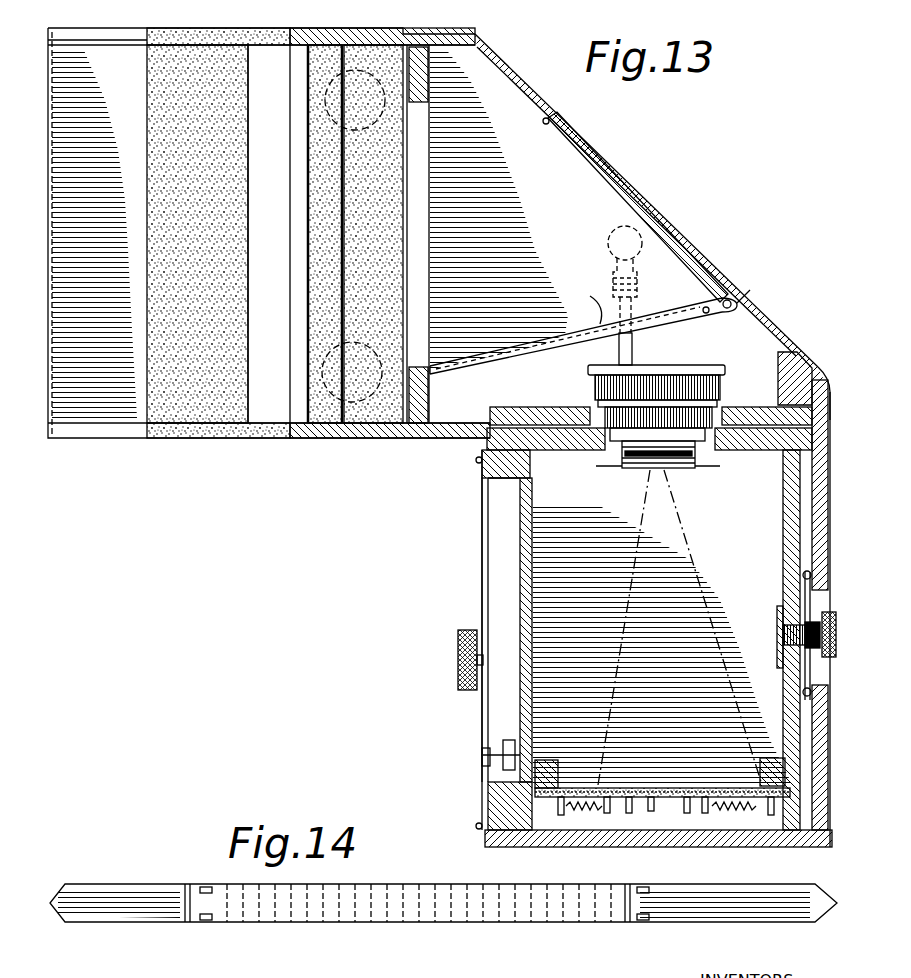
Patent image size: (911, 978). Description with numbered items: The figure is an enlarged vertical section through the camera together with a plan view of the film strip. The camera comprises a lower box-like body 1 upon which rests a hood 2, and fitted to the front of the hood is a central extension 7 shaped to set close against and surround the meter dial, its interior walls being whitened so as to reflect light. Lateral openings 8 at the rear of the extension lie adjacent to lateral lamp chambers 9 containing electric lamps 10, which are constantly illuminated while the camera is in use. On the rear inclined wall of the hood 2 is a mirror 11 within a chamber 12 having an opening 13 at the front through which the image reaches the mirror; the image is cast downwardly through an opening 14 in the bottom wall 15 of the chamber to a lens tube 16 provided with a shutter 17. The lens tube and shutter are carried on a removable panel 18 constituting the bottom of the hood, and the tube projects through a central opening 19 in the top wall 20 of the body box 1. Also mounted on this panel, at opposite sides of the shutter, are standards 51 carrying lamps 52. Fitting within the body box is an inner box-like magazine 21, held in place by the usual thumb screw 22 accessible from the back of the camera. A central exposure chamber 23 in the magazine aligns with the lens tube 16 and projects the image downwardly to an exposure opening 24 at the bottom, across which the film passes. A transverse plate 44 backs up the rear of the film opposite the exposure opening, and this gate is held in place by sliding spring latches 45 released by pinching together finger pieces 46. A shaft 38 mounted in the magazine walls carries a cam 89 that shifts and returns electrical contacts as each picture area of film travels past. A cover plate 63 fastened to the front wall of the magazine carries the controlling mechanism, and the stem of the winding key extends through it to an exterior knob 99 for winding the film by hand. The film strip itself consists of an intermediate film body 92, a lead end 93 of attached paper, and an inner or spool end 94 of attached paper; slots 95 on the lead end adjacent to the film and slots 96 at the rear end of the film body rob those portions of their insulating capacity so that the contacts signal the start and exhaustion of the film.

In FIG. 13, the body 1 is at (824, 472).
In FIG. 13, the hood 2 is at (584, 138).
In FIG. 13, the central extension 7 is at (243, 347).
In FIG. 13, the lateral openings 8 is at (277, 398).
In FIG. 13, the lamp chambers 9 is at (436, 398).
In FIG. 13, the electric lamps 10 is at (330, 118).
In FIG. 13, the mirror 11 is at (584, 168).
In FIG. 13, the chamber 12 is at (552, 244).
In FIG. 13, the opening 13 is at (425, 200).
In FIG. 13, the opening 14 is at (588, 300).
In FIG. 13, the bottom wall 15 is at (522, 345).
In FIG. 13, the lens tube 16 is at (612, 468).
In FIG. 13, the shutter 17 is at (588, 382).
In FIG. 13, the removable panel 18 is at (524, 405).
In FIG. 13, the central opening 19 is at (716, 455).
In FIG. 13, the top wall 20 is at (561, 456).
In FIG. 13, the magazine 21 is at (532, 572).
In FIG. 13, the thumb screw 22 is at (810, 618).
In FIG. 13, the exposure chamber 23 is at (680, 627).
In FIG. 13, the exposure opening 24 is at (663, 790).
In FIG. 13, the shaft 38 is at (500, 750).
In FIG. 13, the transverse plate 44 is at (649, 800).
In FIG. 13, the spring latches 45 is at (607, 800).
In FIG. 13, the finger pieces 46 is at (716, 808).
In FIG. 13, the standards 51 is at (636, 349).
In FIG. 13, the lamps 52 is at (615, 238).
In FIG. 13, the cover plate 63 is at (482, 520).
In FIG. 13, the cam 89 is at (508, 740).
In FIG. 14, the intermediate film body 92 is at (404, 922).
In FIG. 14, the lead end 93 is at (737, 922).
In FIG. 14, the spool end 94 is at (134, 918).
In FIG. 14, the slots 95 is at (641, 922).
In FIG. 14, the slots 96 is at (210, 922).
In FIG. 13, the knob 99 is at (458, 672).